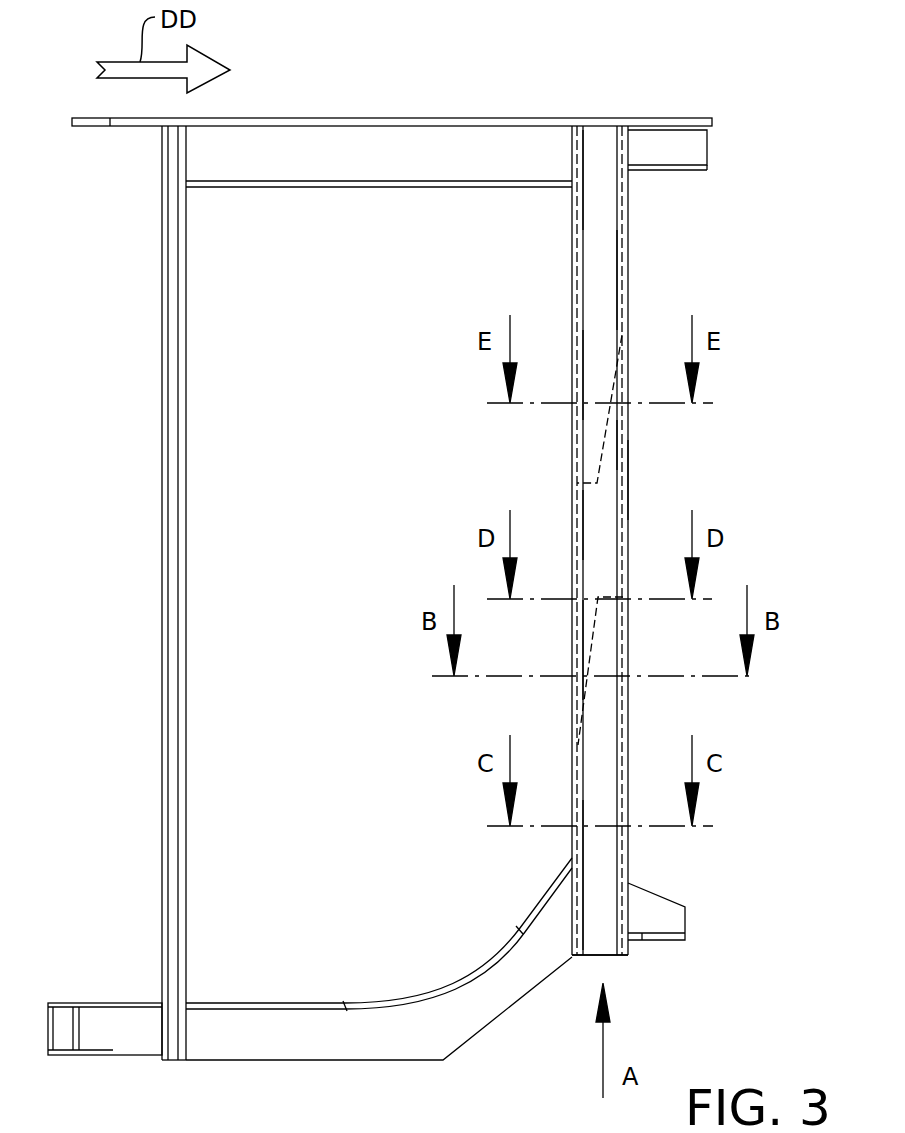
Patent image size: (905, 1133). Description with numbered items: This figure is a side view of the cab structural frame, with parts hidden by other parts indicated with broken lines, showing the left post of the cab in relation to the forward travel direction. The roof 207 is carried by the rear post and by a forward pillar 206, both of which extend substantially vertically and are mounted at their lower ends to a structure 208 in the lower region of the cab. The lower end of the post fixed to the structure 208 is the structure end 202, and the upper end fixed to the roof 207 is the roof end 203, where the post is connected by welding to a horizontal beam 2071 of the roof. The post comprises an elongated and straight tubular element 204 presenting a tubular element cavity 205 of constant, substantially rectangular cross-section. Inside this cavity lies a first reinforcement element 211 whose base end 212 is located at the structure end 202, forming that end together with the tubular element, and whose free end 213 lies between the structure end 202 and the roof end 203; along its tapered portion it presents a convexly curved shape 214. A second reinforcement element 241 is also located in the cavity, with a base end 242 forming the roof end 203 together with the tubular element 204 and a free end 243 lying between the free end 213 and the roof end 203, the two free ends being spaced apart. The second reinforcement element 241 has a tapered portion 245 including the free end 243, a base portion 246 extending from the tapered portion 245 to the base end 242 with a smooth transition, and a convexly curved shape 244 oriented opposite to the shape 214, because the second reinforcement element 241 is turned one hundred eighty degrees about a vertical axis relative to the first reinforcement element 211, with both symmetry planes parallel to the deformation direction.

The structure end 202 is at (620, 958).
The roof end 203 is at (590, 126).
The tubular element 204 is at (628, 473).
The tubular element cavity 205 is at (602, 525).
The pillar 206 is at (172, 590).
The roof 207 is at (368, 118).
The horizontal beam 2071 is at (368, 188).
The structure 208 is at (318, 1032).
The first reinforcement element 211 is at (602, 847).
The base end 212 is at (578, 958).
The free end 213 is at (600, 597).
The convexly curved shape 214 is at (592, 626).
The second reinforcement element 241 is at (603, 273).
The base end 242 is at (615, 126).
The free end 243 is at (583, 500).
The convexly curved shape 244 is at (610, 452).
The tapered portion 245 is at (603, 373).
The base portion 246 is at (603, 177).